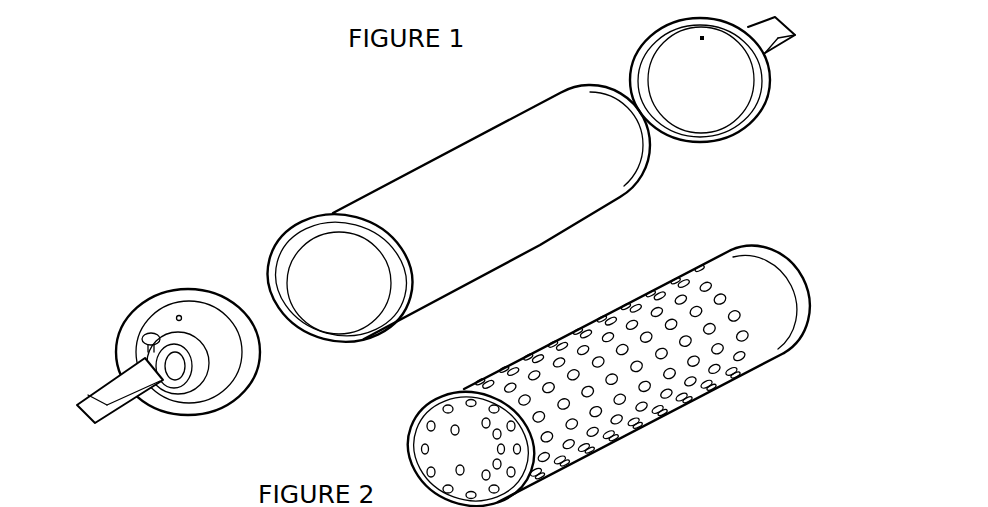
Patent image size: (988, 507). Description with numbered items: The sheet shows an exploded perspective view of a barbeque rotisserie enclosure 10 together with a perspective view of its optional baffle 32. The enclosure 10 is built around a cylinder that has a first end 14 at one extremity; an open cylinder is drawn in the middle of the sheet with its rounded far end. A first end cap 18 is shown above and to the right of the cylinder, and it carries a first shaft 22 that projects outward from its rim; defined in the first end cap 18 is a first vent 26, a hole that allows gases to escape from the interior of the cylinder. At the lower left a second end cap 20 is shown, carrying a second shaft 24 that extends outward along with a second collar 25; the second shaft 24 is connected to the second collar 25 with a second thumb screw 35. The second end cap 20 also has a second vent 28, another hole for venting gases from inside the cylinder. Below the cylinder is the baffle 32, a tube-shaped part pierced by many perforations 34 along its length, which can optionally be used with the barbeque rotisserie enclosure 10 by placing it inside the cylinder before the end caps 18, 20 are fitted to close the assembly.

In FIG. 1, the barbeque rotisserie enclosure 10 is at (382, 134).
In FIG. 1, the first end 14 is at (648, 163).
In FIG. 1, the first end cap 18 is at (762, 87).
In FIG. 1, the first shaft 22 is at (780, 33).
In FIG. 1, the first vent 26 is at (693, 40).
In FIG. 2, the second end cap 20 is at (192, 412).
In FIG. 2, the second shaft 24 is at (108, 388).
In FIG. 2, the second collar 25 is at (147, 398).
In FIG. 2, the second vent 28 is at (180, 314).
In FIG. 2, the second thumb screw 35 is at (148, 333).
In FIG. 2, the baffle 32 is at (725, 382).
In FIG. 2, the perforations 34 is at (590, 417).